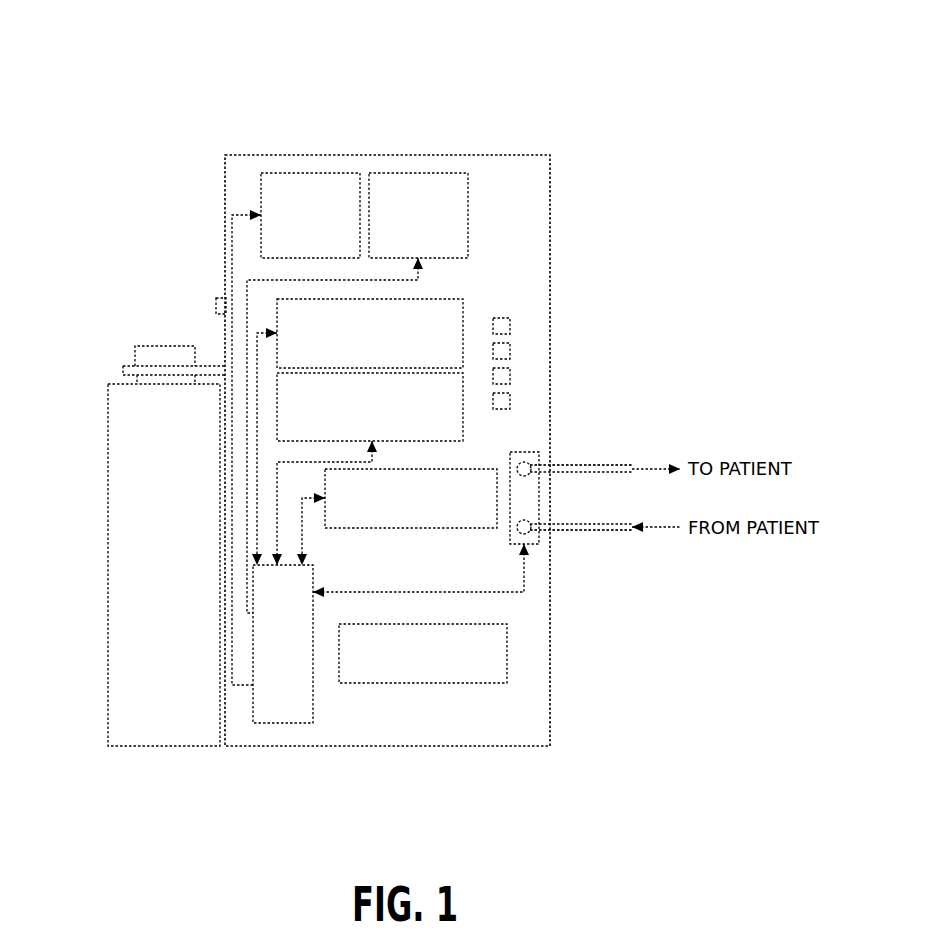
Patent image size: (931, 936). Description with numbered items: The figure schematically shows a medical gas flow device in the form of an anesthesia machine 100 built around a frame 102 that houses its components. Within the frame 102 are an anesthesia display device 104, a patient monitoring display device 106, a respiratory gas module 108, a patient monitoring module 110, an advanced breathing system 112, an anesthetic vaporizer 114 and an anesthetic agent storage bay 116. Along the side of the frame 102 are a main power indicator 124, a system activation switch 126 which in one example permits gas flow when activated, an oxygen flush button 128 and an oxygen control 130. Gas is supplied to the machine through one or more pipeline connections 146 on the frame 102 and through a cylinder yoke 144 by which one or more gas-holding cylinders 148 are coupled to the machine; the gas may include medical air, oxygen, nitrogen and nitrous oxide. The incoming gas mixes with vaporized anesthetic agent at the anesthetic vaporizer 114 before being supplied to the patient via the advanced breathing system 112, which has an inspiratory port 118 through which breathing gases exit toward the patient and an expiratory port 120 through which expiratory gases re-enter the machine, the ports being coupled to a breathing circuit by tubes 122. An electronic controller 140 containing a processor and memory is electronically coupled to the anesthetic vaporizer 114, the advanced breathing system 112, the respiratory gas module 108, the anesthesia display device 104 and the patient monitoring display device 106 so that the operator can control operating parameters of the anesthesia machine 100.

The anesthesia machine 100 is at (592, 33).
The frame 102 is at (490, 155).
The anesthesia display device 104 is at (294, 226).
The patient monitoring display device 106 is at (402, 226).
The respiratory gas module 108 is at (354, 344).
The patient monitoring module 110 is at (354, 418).
The advanced breathing system 112 is at (514, 452).
The anesthetic vaporizer 114 is at (395, 509).
The anesthetic agent storage bay 116 is at (407, 664).
The inspiratory port 118 is at (529, 465).
The expiratory port 120 is at (529, 524).
The tubes 122 is at (603, 472).
The main power indicator 124 is at (511, 326).
The system activation switch 126 is at (511, 351).
The oxygen flush button 128 is at (511, 376).
The oxygen control 130 is at (511, 401).
The electronic controller 140 is at (267, 654).
The cylinder yoke 144 is at (133, 366).
The pipeline connections 146 is at (220, 298).
The gas-holding cylinders 148 is at (108, 445).